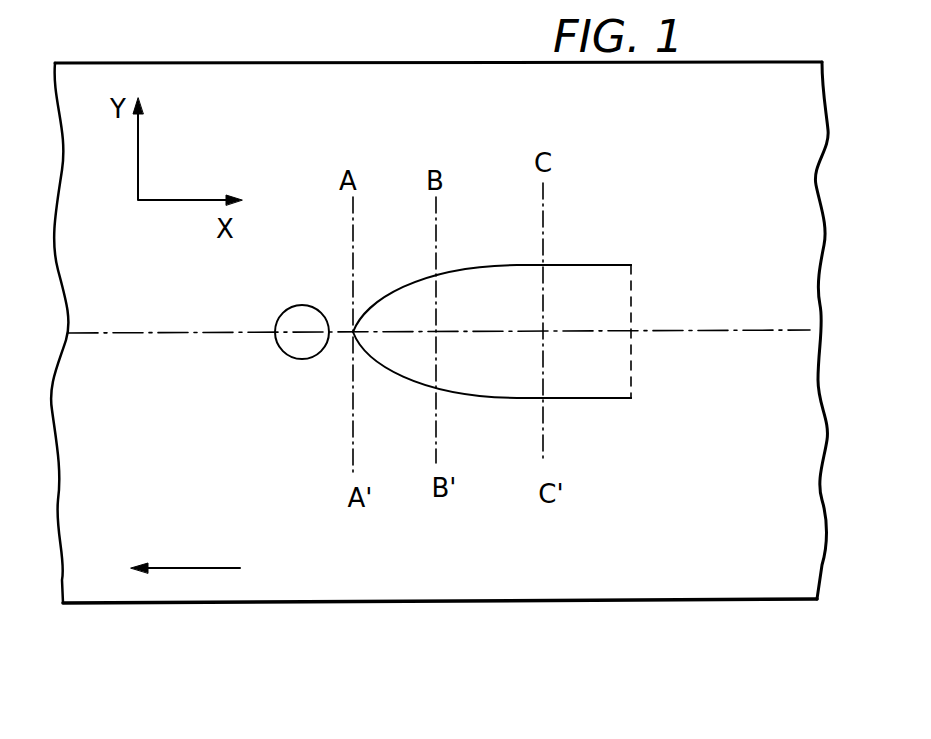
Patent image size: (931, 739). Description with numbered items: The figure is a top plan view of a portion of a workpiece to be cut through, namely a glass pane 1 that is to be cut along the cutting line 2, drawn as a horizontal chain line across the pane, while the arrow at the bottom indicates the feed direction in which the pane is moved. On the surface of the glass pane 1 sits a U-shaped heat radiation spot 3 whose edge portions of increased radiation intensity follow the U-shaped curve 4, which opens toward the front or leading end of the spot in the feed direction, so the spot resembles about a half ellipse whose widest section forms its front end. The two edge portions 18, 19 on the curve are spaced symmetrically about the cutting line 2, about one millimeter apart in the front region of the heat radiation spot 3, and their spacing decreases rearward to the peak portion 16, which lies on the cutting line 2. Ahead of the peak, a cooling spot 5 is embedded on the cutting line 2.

The glass pane 1 is at (222, 72).
The cutting line 2 is at (695, 313).
The heat radiation spot 3 is at (610, 292).
The U-shaped curve 4 is at (507, 266).
The cooling spot 5 is at (293, 310).
The peak portion 16 is at (353, 328).
The edge portion 18 is at (610, 266).
The edge portion 19 is at (630, 400).